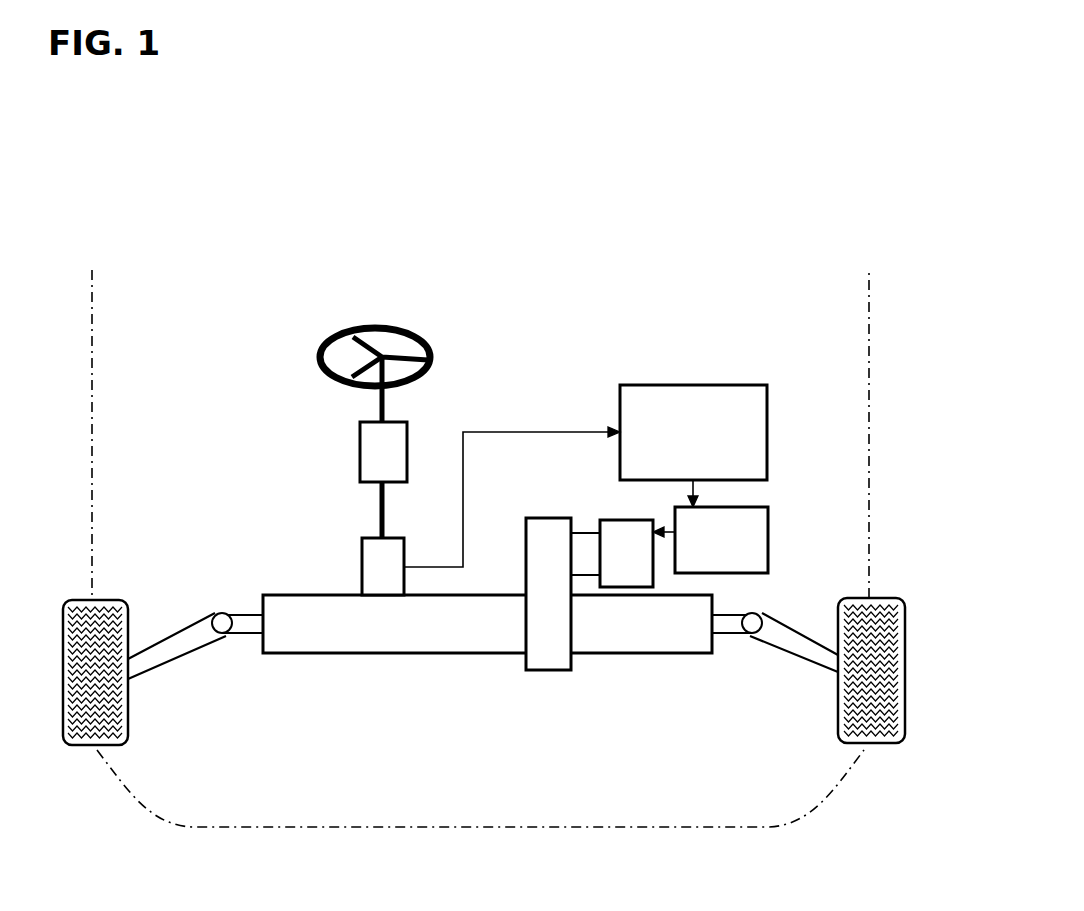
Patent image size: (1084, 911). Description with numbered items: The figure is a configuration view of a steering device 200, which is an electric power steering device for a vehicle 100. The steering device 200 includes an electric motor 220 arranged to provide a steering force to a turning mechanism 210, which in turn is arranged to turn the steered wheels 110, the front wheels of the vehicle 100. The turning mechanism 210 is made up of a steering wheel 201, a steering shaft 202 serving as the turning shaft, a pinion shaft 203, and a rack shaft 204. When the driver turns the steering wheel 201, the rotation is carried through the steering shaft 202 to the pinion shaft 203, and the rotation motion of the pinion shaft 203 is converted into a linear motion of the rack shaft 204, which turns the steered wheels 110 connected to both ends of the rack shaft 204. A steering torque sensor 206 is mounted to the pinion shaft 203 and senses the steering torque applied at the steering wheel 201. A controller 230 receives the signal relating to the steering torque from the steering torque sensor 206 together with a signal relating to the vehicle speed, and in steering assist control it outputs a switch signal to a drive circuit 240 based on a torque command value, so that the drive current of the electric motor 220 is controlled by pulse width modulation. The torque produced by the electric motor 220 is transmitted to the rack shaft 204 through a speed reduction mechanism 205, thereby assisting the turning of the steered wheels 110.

The vehicle 100 is at (872, 433).
The steered wheels 110 is at (128, 712).
The steering device 200 is at (553, 392).
The steering wheel 201 is at (407, 342).
The steering shaft 202 is at (385, 398).
The pinion shaft 203 is at (380, 510).
The rack shaft 204 is at (350, 653).
The speed reduction mechanism 205 is at (550, 670).
The steering torque sensor 206 is at (375, 575).
The turning mechanism 210 is at (275, 407).
The electric motor 220 is at (606, 520).
The controller 230 is at (685, 385).
The drive circuit 240 is at (768, 528).